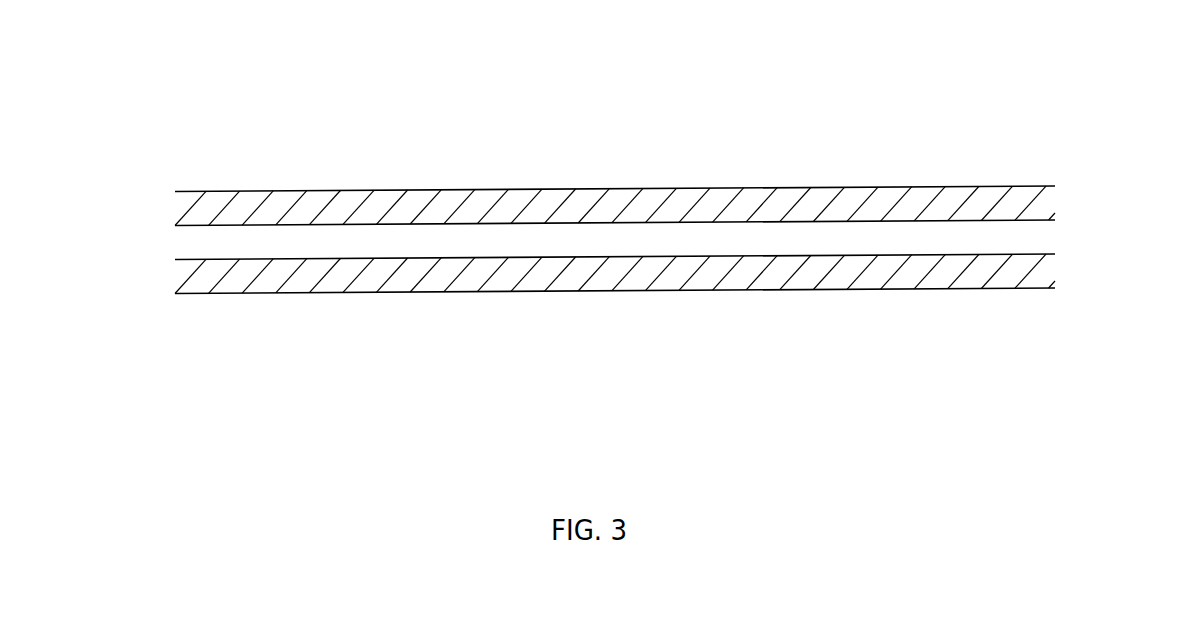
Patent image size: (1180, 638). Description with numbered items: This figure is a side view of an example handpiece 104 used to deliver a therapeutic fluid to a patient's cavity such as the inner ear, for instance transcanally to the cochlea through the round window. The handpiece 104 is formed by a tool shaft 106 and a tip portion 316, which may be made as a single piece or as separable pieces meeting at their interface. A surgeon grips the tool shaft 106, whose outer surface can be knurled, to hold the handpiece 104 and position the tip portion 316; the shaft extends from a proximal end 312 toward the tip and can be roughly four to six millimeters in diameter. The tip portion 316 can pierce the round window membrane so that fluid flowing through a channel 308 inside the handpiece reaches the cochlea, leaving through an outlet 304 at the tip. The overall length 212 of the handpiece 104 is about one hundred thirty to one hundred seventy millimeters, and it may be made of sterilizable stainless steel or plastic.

The handpiece 104 is at (328, 78).
The tool shaft 106 is at (668, 149).
The outlet 304 is at (1021, 203).
The channel 308 is at (1027, 237).
The proximal end 312 is at (1064, 233).
The tip portion 316 is at (156, 240).
The overall length 212 is at (1065, 405).